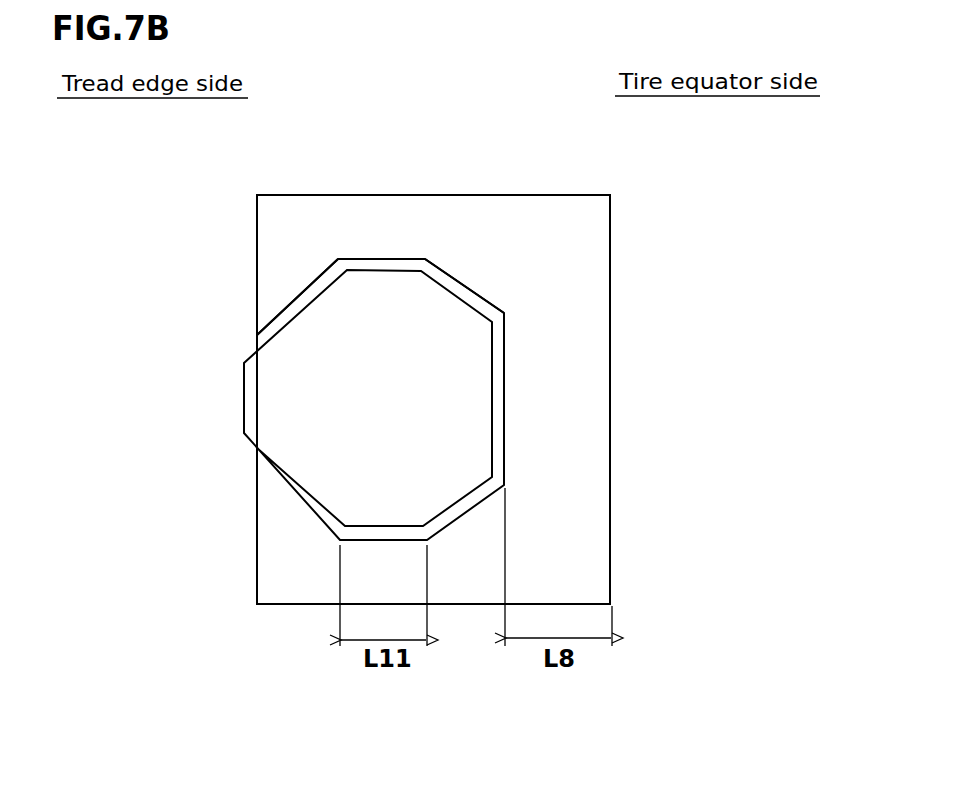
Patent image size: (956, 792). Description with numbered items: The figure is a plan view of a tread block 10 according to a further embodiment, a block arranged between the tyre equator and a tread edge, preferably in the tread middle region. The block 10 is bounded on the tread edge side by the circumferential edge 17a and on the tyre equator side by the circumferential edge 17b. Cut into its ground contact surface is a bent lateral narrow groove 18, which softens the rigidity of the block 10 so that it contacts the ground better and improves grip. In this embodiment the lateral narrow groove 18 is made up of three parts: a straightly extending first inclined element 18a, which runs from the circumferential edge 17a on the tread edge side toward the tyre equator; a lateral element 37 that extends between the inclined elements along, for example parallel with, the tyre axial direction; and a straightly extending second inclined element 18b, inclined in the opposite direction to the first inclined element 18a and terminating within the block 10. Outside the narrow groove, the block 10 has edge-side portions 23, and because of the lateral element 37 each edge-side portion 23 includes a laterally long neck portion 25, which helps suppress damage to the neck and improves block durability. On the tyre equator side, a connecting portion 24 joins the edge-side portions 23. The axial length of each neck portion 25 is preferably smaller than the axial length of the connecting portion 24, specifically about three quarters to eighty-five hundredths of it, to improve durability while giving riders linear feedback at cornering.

The block 10 is at (299, 180).
The circumferential edge 17a is at (257, 233).
The circumferential edge 17b is at (612, 299).
The lateral narrow groove 18 is at (447, 272).
The first inclined element 18a is at (302, 305).
The second inclined element 18b is at (463, 293).
The edge-side portion 23 is at (305, 335).
The neck portion 25 is at (409, 224).
The connecting portion 24 is at (566, 409).
The lateral element 37 is at (382, 267).